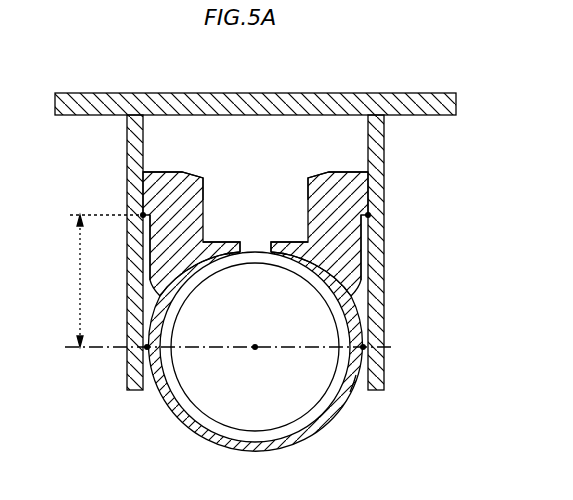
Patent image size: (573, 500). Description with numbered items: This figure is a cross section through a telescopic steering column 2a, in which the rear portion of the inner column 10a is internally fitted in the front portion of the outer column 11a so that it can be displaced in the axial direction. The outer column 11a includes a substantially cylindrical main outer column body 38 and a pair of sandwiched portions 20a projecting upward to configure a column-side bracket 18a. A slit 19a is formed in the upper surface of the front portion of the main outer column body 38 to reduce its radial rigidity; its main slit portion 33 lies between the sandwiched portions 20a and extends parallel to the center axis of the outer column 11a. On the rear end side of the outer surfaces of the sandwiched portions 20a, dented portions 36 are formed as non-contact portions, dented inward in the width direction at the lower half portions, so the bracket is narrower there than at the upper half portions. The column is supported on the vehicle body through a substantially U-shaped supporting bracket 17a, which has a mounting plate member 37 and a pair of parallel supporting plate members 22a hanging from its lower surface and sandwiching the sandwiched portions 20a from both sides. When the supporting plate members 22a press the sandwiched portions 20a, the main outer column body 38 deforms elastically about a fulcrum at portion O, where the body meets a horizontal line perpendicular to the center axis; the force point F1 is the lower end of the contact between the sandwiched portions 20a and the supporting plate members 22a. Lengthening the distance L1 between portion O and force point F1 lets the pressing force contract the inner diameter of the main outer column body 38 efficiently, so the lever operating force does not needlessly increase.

The steering column 2a is at (295, 369).
The inner column 10a is at (222, 434).
The outer column 11a is at (362, 402).
The supporting bracket 17a is at (258, 221).
The column-side bracket 18a is at (196, 170).
The slit 19a is at (240, 250).
The sandwiched portions 20a is at (165, 188).
The supporting plate members 22a is at (133, 133).
The main slit portion 33 is at (272, 250).
The dented portions 36 is at (150, 256).
The mounting plate member 37 is at (300, 104).
The main outer column body 38 is at (354, 370).
The portion O is at (144, 350).
The force point F1 is at (141, 214).
The distance L1 is at (102, 281).